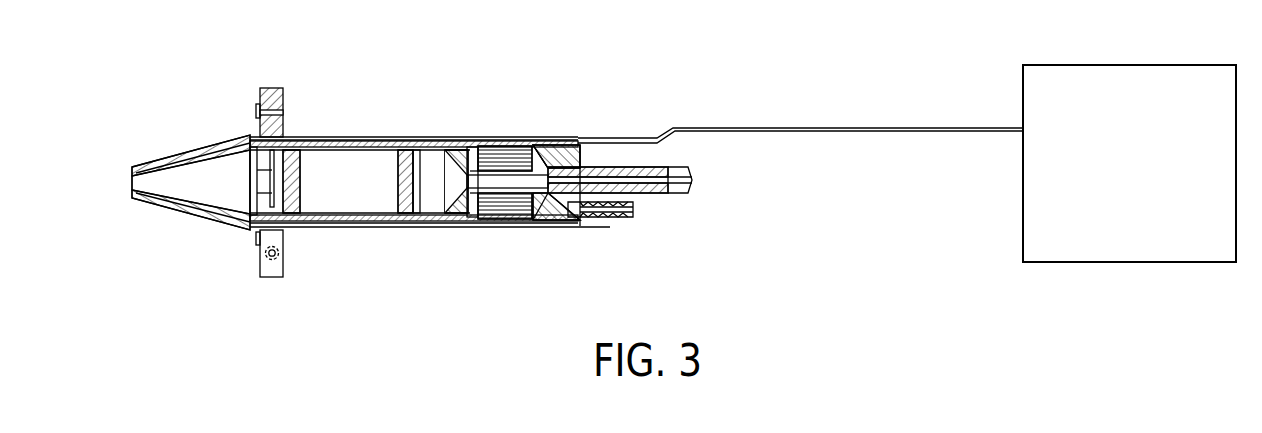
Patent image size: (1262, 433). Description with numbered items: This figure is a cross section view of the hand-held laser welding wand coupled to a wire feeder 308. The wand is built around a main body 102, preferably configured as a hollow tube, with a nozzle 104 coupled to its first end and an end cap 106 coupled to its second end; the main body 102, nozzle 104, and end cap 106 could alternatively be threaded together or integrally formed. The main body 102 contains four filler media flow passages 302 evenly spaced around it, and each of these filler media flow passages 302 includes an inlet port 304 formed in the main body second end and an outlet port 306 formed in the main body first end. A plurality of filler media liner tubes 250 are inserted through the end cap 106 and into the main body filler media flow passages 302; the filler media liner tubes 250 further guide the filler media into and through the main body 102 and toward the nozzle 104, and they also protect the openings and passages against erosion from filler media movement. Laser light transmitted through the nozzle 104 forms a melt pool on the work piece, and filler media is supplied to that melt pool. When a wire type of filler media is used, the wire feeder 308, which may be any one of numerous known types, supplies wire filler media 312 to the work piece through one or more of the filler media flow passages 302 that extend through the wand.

The main body 102 is at (348, 137).
The nozzle 104 is at (170, 152).
The end cap 106 is at (561, 137).
The filler media liner tubes 250 is at (598, 137).
The filler media flow passages 302 is at (425, 137).
The inlet port 304 is at (531, 139).
The outlet port 306 is at (251, 137).
The wire feeder 308 is at (1166, 65).
The wire filler media 312 is at (795, 128).